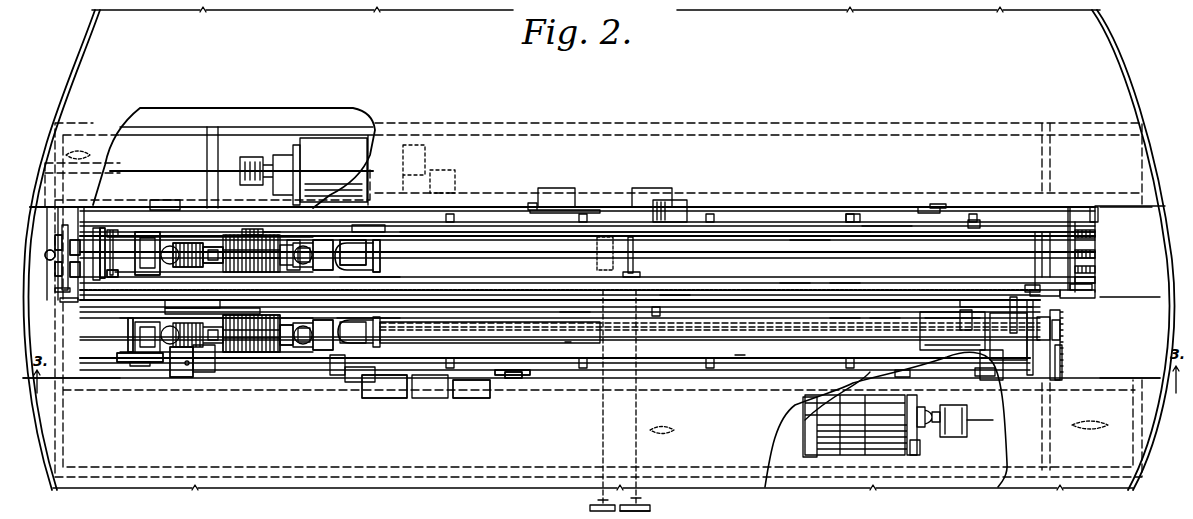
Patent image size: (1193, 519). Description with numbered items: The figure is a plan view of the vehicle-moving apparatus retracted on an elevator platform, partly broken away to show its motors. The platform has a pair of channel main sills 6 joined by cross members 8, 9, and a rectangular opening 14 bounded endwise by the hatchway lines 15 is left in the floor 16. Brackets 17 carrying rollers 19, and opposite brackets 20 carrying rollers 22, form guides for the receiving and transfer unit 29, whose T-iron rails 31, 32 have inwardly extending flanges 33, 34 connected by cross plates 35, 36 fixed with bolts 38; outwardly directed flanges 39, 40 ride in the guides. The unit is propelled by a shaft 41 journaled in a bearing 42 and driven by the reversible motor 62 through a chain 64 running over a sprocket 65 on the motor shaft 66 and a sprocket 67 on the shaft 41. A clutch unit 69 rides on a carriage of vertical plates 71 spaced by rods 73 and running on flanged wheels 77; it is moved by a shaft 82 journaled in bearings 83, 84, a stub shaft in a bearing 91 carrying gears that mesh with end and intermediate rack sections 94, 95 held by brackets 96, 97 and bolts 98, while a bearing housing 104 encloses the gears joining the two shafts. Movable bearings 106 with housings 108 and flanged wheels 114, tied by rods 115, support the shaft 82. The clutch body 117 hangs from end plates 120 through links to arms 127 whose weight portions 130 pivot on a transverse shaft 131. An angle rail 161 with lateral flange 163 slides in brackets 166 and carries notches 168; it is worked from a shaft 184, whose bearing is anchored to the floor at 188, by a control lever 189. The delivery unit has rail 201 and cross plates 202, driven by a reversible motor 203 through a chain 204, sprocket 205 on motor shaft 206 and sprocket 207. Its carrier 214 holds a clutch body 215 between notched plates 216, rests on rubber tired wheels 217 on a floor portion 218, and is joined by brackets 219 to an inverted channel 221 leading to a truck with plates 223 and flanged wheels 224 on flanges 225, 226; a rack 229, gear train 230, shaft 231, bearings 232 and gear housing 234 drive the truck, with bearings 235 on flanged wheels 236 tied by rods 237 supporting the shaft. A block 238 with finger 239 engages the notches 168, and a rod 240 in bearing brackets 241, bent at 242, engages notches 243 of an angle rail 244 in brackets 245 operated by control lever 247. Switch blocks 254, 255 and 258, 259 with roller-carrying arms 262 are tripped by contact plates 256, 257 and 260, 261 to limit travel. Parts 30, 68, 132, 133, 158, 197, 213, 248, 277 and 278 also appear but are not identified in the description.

The main sills 6 is at (993, 478).
The cross member 8 is at (60, 290).
The cross member 9 is at (1047, 356).
The rectangularly-shaped opening 14 is at (1160, 380).
The hatchway lines 15 is at (1172, 297).
The floor 16 is at (1148, 197).
The brackets 17 is at (934, 208).
The rollers 19 is at (925, 207).
The brackets 20 is at (514, 378).
The rollers 22 is at (508, 376).
The receiving and transfer unit 29 is at (245, 218).
The guide 30 is at (106, 357).
The T-iron rail 31 is at (1093, 218).
The T-iron rail 32 is at (1095, 275).
The inwardly extending flange 33 is at (1011, 260).
The inwardly extending flange 34 is at (105, 280).
The cross plate 35 is at (66, 300).
The cross plate 36 is at (1094, 256).
The bolts 38 is at (1094, 227).
The outwardly directed flange 39 is at (1070, 283).
The outwardly directed flange 40 is at (1055, 287).
The shaft 41 is at (120, 283).
The bearing 42 is at (55, 264).
The reversible motor 62 is at (342, 170).
The chain 64 is at (55, 238).
The sprocket 65 is at (48, 170).
The motor shaft 66 is at (112, 188).
The sprocket 67 is at (45, 251).
The rod 68 is at (368, 230).
The clutch unit 69 is at (270, 238).
The plates 71 is at (295, 270).
The rods 73 is at (380, 250).
The flanged wheels 77 is at (368, 277).
The shaft 82 is at (731, 260).
The bearing 83 is at (80, 255).
The bearing 84 is at (1094, 240).
The bearing 91 is at (258, 153).
The end rack section 94 is at (887, 228).
The intermediate rack section 95 is at (806, 232).
The bracket 96 is at (972, 226).
The bracket 97 is at (848, 235).
The bolts 98 is at (854, 226).
The bearing housing 104 is at (96, 235).
The movable bearings 106 is at (631, 236).
The housing 108 is at (636, 246).
The flanged wheels 114 is at (638, 275).
The parallel rods 115 is at (505, 240).
The clutch body 117 is at (230, 240).
The end plates 120 is at (220, 250).
The arm 127 is at (185, 245).
The weight portion 130 is at (160, 240).
The transverse shaft 131 is at (350, 238).
The bar 132 is at (170, 305).
The chain 133 is at (268, 291).
The ball 158 is at (292, 283).
The angle rail 161 is at (852, 270).
The lateral flange 163 is at (757, 290).
The brackets 166 is at (1032, 292).
The notches 168 is at (793, 285).
The shaft 184 is at (636, 442).
The bearing anchorage 188 is at (645, 511).
The control lever 189 is at (636, 498).
The rail 197 is at (513, 298).
The T-iron rail 201 is at (1000, 382).
The cross plates 202 is at (190, 372).
The reversible motor 203 is at (912, 440).
The chain 204 is at (1062, 372).
The sprocket 205 is at (1062, 430).
The motor shaft 206 is at (978, 420).
The sprocket 207 is at (1058, 330).
The block 213 is at (170, 375).
The carrier 214 is at (318, 357).
The clutch body 215 is at (258, 352).
The notched plates 216 is at (283, 352).
The rubber tired wheels 217 is at (138, 366).
The floor portion 218 is at (95, 378).
The brackets 219 is at (392, 342).
The inverted channel 221 is at (568, 345).
The plates 223 is at (890, 320).
The flanged wheels 224 is at (905, 390).
The inwardly directed flange 225 is at (846, 320).
The inwardly directed flange 226 is at (870, 375).
The rack 229 is at (738, 358).
The gear train 230 is at (900, 377).
The shaft 231 is at (966, 320).
The bearings 232 is at (1012, 315).
The housing 234 is at (1022, 375).
The spaced bearings 235 is at (955, 400).
The flanged wheels 236 is at (963, 437).
The rods 237 is at (950, 332).
The block 238 is at (130, 331).
The pin or finger 239 is at (232, 298).
The rod 240 is at (575, 312).
The bearing brackets 241 is at (653, 318).
The inwardly bent end 242 is at (1057, 312).
The notches 243 is at (702, 300).
The angle rail 244 is at (672, 295).
The brackets 245 is at (365, 318).
The control lever 247 is at (598, 500).
The bolt 248 is at (78, 270).
The switch block 254 is at (574, 200).
The switch block 255 is at (645, 200).
The contact plate 256 is at (163, 200).
The contact plate 257 is at (685, 208).
The switch block 258 is at (407, 395).
The switch block 259 is at (476, 398).
The contact plate 260 is at (362, 380).
The contact plate 261 is at (990, 376).
The roller-carrying arms 262 is at (534, 205).
The bolt 277 is at (1085, 292).
The bolt 278 is at (1092, 283).